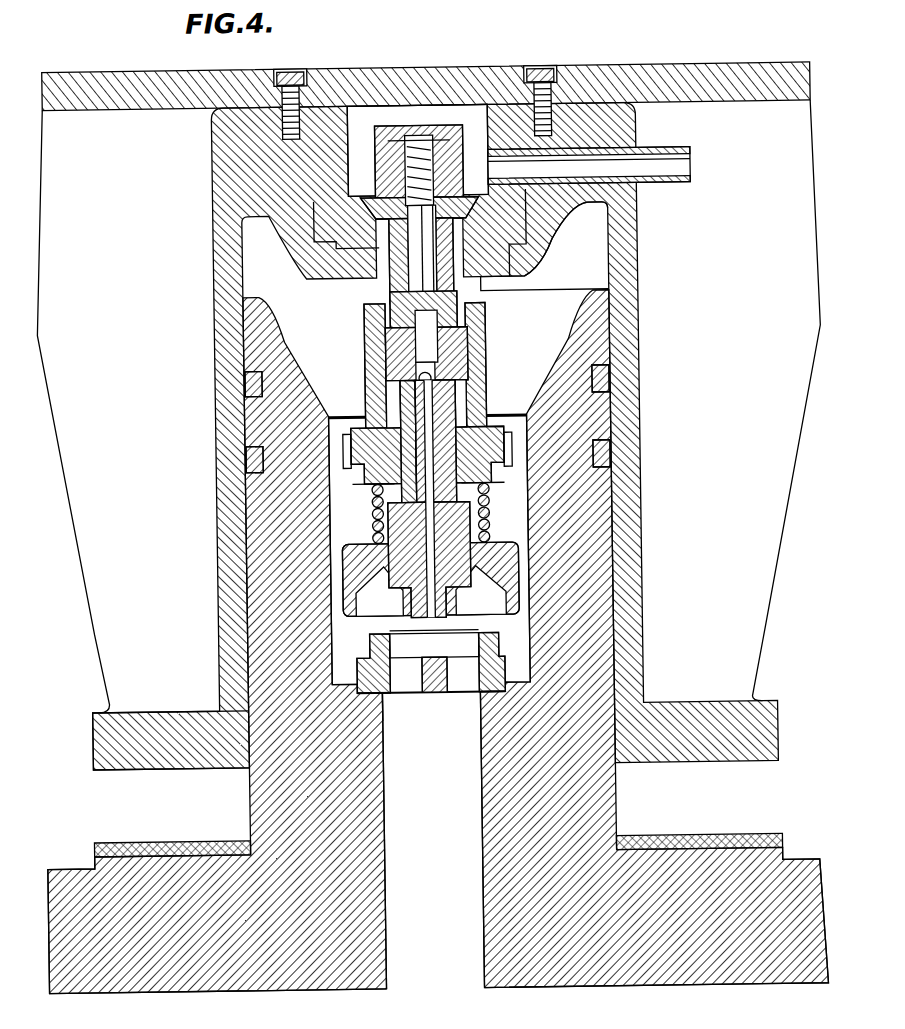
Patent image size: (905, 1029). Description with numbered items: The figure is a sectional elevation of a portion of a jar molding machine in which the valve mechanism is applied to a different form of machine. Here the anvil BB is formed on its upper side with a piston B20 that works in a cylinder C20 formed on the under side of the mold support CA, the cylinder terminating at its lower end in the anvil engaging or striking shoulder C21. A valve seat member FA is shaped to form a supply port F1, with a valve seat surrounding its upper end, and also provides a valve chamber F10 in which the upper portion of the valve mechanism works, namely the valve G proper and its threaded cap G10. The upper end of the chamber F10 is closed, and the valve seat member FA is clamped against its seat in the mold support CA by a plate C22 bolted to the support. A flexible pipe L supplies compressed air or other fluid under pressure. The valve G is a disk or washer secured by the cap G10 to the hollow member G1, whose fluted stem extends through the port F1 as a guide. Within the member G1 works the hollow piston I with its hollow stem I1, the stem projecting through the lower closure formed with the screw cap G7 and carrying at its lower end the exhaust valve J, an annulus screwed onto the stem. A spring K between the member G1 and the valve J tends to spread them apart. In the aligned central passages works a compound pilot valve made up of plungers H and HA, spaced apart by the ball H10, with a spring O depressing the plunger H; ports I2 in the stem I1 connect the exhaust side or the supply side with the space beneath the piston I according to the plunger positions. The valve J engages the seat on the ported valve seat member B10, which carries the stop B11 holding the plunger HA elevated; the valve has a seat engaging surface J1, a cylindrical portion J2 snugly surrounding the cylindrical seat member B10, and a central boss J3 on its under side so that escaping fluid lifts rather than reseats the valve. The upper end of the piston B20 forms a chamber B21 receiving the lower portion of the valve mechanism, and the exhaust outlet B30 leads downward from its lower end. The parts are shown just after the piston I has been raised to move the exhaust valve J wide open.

The valve seat member FA is at (330, 152).
The plate C22 is at (505, 92).
The mold support CA is at (729, 92).
The valve chamber F10 is at (369, 120).
The threaded cap G10 is at (455, 128).
The valve G is at (481, 200).
The spring O is at (424, 140).
The supply port F1 is at (390, 232).
The flexible pipe L is at (663, 183).
The cylinder C20 is at (592, 257).
The piston B20 is at (596, 564).
The chamber B21 is at (517, 510).
The anvil engaging or striking shoulder C21 is at (177, 766).
The plunger H is at (468, 301).
The hollow piston I is at (385, 340).
The ball H10 is at (462, 362).
The plunger HA is at (434, 387).
The ports I2 is at (405, 380).
The hollow stem I1 is at (398, 400).
The member G1 is at (488, 400).
The spring K is at (489, 520).
The screw cap G7 is at (478, 482).
The valve J is at (494, 577).
The seat engaging surface J1 is at (365, 580).
The cylindrical portion J2 is at (345, 617).
The central boss J3 is at (407, 592).
The stop B11 is at (433, 697).
The ported valve seat member B10 is at (388, 694).
The exhaust outlet B30 is at (433, 840).
The anvil BB is at (352, 988).